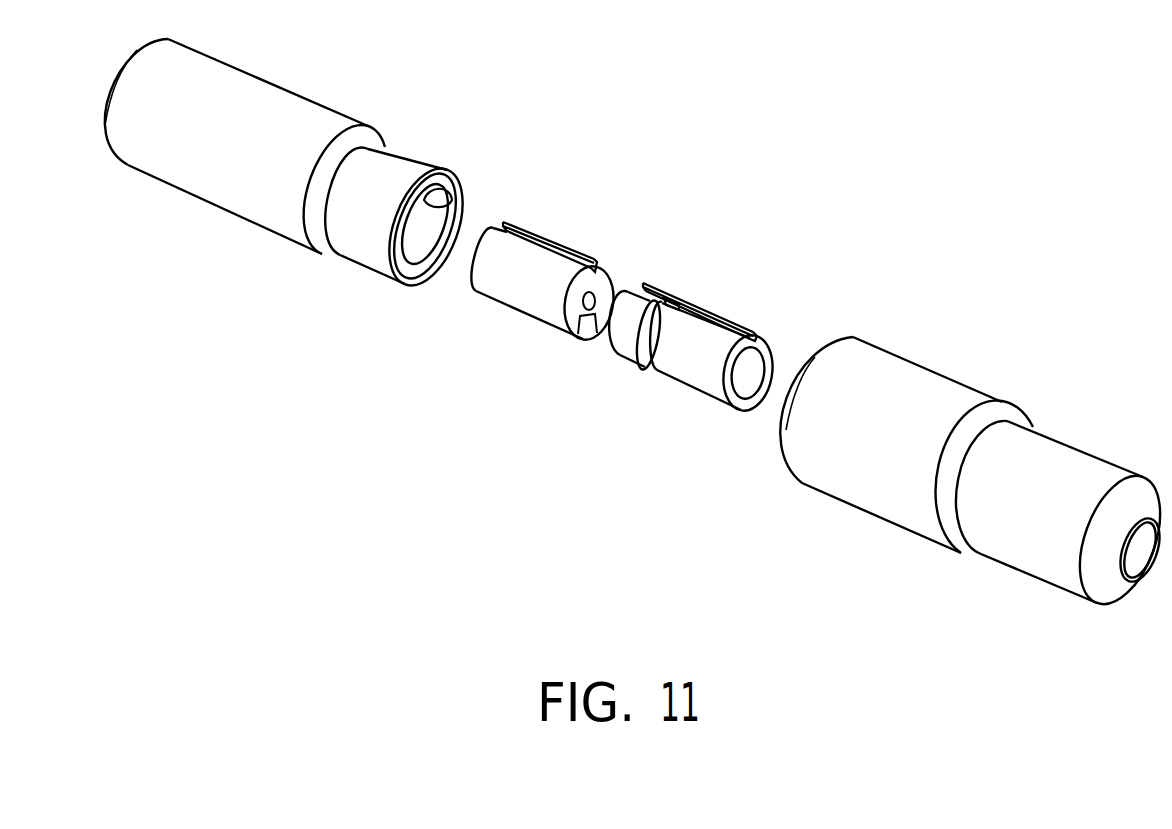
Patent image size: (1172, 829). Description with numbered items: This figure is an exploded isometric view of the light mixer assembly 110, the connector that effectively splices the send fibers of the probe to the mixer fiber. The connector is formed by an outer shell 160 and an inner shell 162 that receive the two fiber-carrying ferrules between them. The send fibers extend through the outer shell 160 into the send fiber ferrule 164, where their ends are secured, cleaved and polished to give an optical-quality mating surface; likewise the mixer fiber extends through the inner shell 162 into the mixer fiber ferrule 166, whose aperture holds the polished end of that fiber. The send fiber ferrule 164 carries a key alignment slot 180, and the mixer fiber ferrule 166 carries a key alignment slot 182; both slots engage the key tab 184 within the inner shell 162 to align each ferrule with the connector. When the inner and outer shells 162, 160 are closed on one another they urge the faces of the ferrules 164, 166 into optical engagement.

The light mixer assembly 110 is at (667, 233).
The outer shell 160 is at (910, 375).
The inner shell 162 is at (247, 87).
The send fiber ferrule 164 is at (677, 377).
The mixer fiber ferrule 166 is at (500, 305).
The key alignment slot 180 is at (752, 333).
The key alignment slot 182 is at (520, 228).
The key tab 184 is at (463, 198).